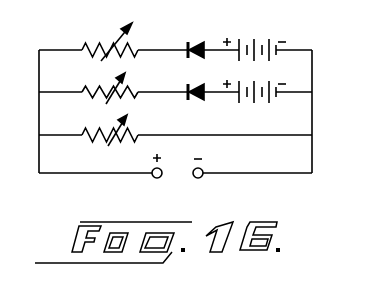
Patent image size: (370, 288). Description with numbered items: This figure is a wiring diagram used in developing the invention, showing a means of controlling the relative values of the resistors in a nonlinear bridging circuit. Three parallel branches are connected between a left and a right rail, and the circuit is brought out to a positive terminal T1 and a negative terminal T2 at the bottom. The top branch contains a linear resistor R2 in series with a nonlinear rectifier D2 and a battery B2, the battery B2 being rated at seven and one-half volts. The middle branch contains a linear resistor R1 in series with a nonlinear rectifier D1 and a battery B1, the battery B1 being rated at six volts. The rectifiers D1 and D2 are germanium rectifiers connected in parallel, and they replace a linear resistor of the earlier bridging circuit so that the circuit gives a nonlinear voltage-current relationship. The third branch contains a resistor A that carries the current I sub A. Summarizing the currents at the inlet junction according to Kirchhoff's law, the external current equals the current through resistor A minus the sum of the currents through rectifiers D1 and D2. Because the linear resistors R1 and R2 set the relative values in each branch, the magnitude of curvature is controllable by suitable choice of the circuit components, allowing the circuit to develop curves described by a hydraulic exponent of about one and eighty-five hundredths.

The linear resistor R2 is at (135, 41).
The linear resistor R1 is at (143, 74).
The resistor A is at (142, 116).
The nonlinear rectifier D2 is at (194, 42).
The nonlinear rectifier D1 is at (194, 85).
The battery B2 is at (266, 40).
The battery B1 is at (266, 82).
The terminal T1 is at (152, 178).
The terminal T2 is at (200, 181).